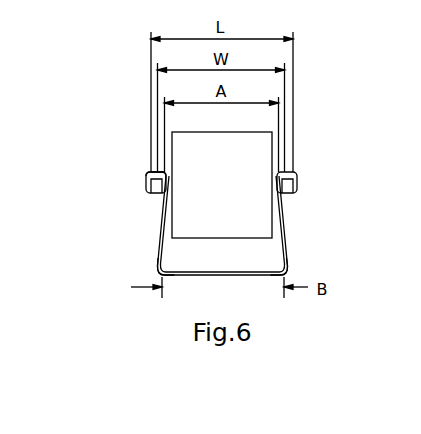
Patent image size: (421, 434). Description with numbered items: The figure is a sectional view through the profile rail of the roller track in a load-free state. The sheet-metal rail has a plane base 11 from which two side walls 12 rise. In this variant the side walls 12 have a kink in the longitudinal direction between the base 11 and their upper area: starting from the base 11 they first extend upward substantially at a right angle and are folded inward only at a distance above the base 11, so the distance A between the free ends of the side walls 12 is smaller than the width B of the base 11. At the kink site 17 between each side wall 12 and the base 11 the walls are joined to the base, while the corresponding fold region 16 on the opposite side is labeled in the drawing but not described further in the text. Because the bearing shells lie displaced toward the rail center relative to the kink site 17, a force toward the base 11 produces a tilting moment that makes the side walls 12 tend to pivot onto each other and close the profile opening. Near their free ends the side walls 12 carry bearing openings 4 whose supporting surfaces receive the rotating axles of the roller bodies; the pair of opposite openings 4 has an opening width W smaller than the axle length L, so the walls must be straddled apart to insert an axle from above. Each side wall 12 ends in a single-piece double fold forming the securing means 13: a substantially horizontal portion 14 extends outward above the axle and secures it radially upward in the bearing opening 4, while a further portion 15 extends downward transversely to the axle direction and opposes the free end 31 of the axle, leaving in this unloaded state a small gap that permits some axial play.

The bearing opening 4 is at (167, 173).
The base 11 is at (198, 273).
The side wall 12 is at (158, 227).
The securing means 13 is at (145, 167).
The portion 14 is at (158, 169).
The further portion 15 is at (147, 179).
The left corner bend 16 is at (156, 248).
The kink site 17 is at (289, 275).
The free end 31 is at (287, 195).